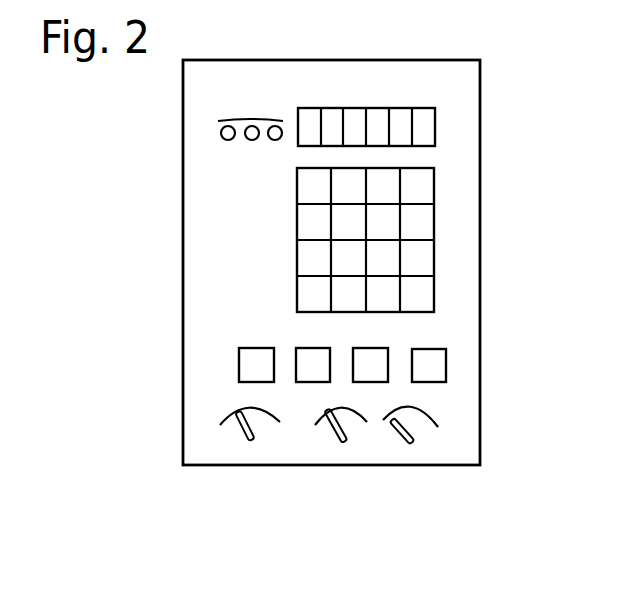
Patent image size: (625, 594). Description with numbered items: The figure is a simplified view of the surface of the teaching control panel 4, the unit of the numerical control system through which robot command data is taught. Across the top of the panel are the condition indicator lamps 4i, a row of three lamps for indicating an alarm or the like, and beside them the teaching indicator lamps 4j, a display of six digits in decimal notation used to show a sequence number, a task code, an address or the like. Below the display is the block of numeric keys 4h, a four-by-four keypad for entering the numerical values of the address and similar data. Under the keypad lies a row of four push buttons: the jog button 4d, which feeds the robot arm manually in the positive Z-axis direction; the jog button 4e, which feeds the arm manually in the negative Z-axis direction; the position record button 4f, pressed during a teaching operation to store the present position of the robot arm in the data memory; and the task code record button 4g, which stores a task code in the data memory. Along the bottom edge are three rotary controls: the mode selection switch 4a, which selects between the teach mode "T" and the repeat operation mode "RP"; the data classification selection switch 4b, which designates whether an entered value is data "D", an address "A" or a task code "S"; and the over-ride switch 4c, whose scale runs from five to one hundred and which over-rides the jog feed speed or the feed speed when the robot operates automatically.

The teaching control panel 4 is at (186, 443).
The mode selection switch 4a is at (236, 443).
The data classification selection switch 4b is at (335, 442).
The over-ride switch 4c is at (402, 448).
The jog button 4d is at (239, 352).
The jog button 4e is at (302, 352).
The position record button 4f is at (378, 345).
The task code record button 4g is at (446, 364).
The numeric keys 4h is at (434, 255).
The condition indicator lamps 4i is at (248, 113).
The teaching indicator lamps 4j is at (435, 131).